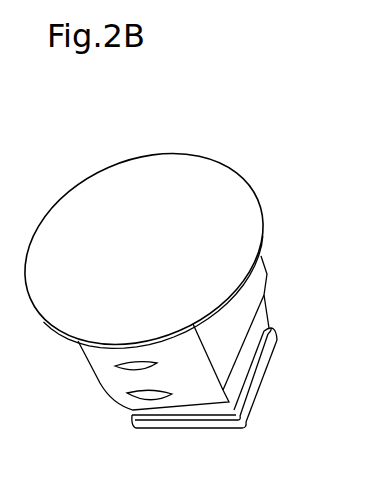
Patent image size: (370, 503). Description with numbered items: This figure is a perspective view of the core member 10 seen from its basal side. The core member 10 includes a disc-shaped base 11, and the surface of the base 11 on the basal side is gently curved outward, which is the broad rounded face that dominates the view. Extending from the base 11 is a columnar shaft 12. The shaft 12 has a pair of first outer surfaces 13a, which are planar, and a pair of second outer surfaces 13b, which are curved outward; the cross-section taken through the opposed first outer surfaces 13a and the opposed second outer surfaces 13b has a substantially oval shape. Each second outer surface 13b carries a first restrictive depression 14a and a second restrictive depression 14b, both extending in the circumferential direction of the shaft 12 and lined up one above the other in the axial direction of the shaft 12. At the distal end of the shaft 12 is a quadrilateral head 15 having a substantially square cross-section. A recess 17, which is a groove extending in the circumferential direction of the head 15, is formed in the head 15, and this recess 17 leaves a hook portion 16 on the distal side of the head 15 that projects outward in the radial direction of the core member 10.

The core member 10 is at (259, 151).
The base 11 is at (260, 198).
The shaft 12 is at (261, 266).
The first outer surfaces 13a is at (243, 293).
The second outer surfaces 13b is at (100, 377).
The first restrictive depression 14a is at (172, 393).
The second restrictive depression 14b is at (157, 364).
The head 15 is at (213, 436).
The hook portion 16 is at (258, 395).
The recess 17 is at (272, 328).